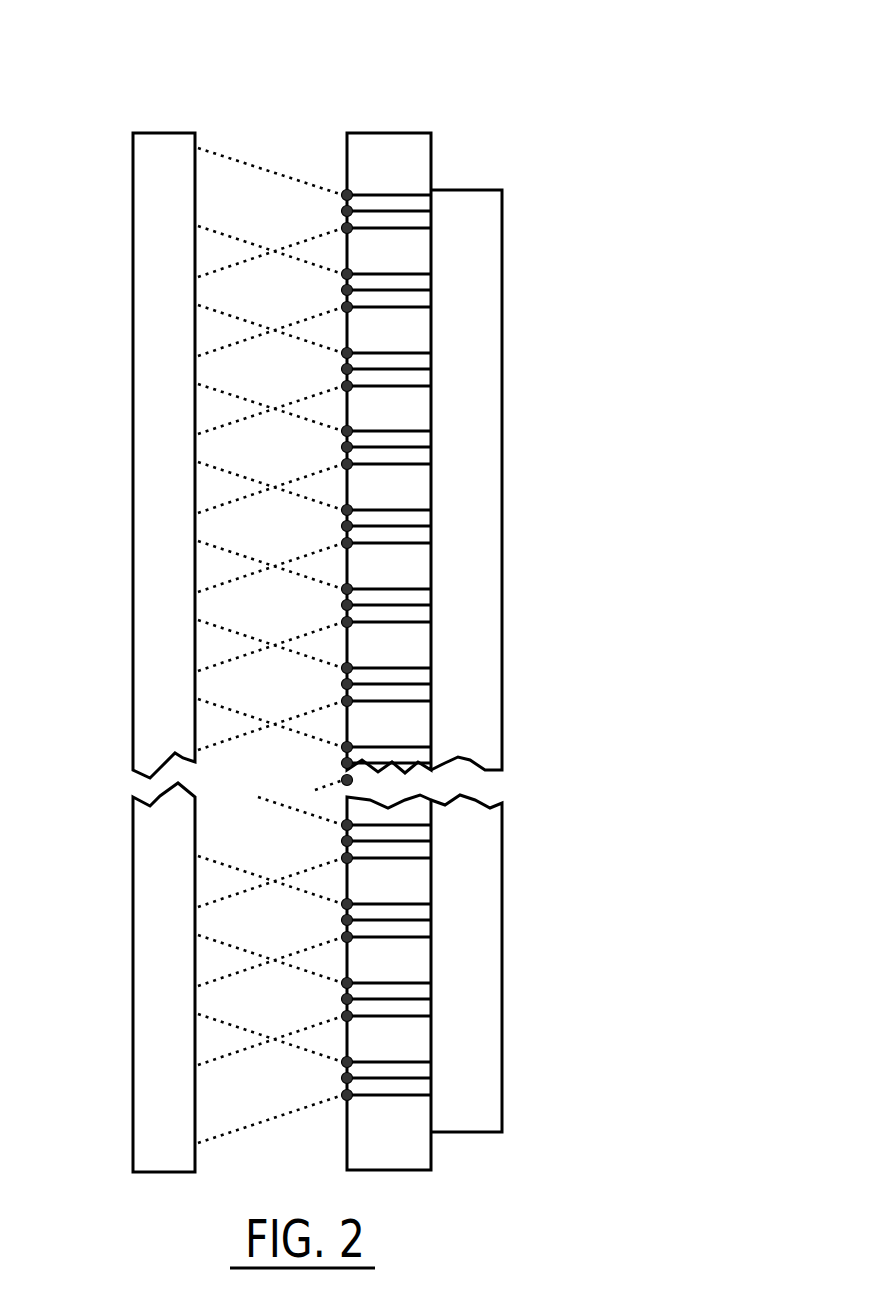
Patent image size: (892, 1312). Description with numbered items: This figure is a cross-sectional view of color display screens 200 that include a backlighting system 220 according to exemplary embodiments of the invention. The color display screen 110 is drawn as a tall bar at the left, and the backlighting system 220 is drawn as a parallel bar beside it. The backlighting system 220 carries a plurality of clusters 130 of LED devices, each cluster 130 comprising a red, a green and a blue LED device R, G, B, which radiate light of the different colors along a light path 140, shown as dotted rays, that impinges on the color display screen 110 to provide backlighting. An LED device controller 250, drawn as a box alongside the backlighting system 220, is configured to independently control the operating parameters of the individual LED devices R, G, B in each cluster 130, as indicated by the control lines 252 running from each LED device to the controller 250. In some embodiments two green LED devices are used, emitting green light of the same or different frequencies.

The color display screens 200 is at (190, 82).
The color display screen 110 is at (133, 220).
The light path 140 is at (215, 150).
The cluster of LED devices 130 is at (312, 211).
The backlighting system 220 is at (478, 118).
The LED device controller 250 is at (462, 400).
The control lines 252 is at (383, 195).